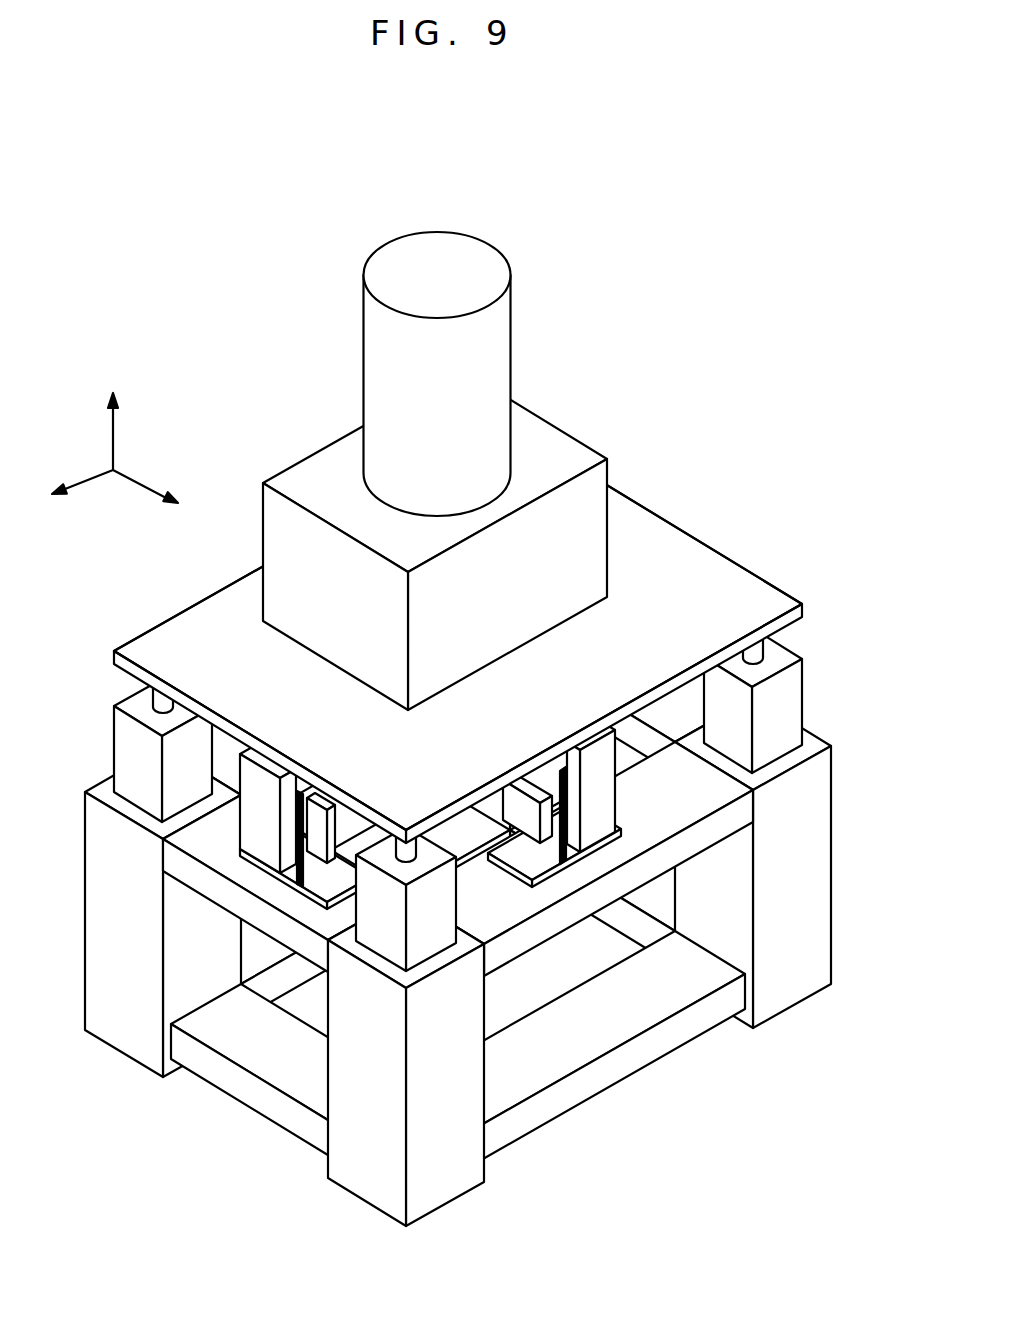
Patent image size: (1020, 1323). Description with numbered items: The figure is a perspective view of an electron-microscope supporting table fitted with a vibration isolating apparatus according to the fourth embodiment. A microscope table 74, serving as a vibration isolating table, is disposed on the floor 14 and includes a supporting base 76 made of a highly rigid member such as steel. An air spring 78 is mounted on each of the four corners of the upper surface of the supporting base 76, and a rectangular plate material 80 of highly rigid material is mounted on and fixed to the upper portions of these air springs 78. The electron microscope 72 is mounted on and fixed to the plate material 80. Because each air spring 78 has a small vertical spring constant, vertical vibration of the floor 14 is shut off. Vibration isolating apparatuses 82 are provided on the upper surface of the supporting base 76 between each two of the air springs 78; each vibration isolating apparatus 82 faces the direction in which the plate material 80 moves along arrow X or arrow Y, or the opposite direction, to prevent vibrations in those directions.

The floor 14 is at (444, 729).
The electron microscope 72 is at (550, 450).
The microscope table 74 is at (673, 511).
The supporting base 76 is at (795, 982).
The air spring 78 is at (792, 705).
The plate material 80 is at (712, 580).
The vibration isolating apparatus 82 is at (628, 797).